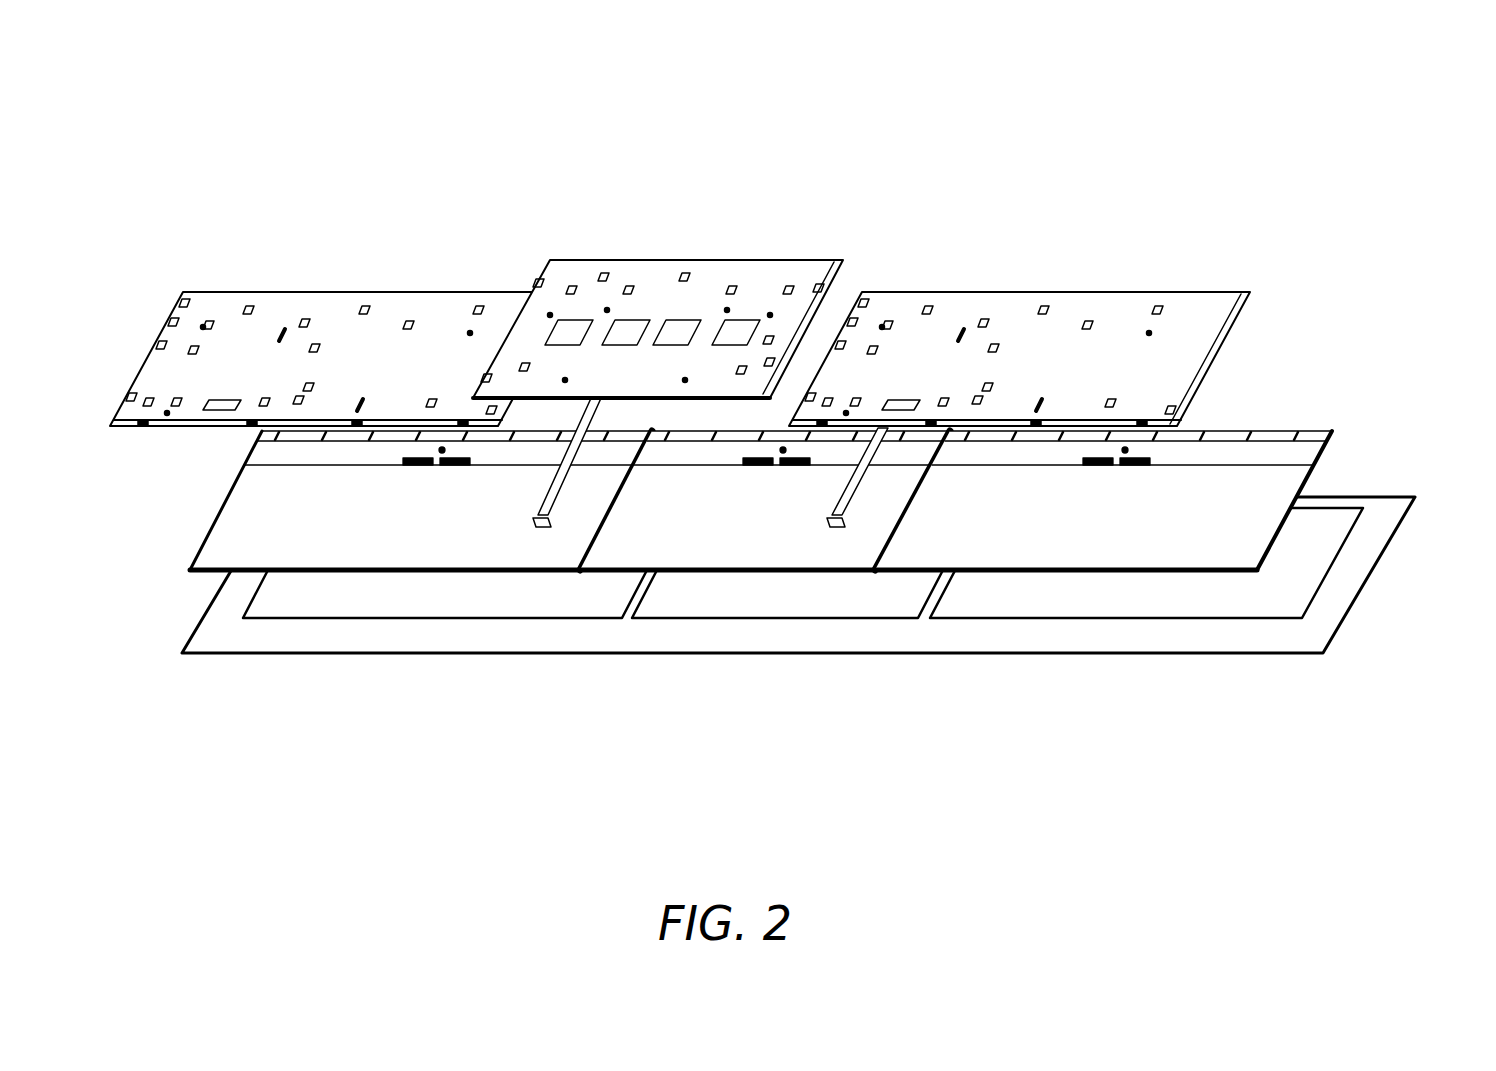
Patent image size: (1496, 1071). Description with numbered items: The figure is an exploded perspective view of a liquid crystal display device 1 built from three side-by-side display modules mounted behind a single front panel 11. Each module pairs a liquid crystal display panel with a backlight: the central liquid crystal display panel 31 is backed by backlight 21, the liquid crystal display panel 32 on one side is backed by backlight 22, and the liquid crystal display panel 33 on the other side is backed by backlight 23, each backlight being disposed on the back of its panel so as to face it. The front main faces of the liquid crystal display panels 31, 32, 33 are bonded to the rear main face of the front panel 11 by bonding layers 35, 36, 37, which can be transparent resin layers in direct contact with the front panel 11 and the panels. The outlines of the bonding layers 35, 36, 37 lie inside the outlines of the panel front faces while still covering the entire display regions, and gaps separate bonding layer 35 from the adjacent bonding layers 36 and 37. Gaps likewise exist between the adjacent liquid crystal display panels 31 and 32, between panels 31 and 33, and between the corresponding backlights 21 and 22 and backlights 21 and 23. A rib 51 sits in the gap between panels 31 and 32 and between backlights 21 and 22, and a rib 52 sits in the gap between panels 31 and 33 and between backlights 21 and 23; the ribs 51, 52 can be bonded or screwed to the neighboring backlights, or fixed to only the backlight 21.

The liquid crystal display device 1 is at (955, 158).
The front panel 11 is at (1215, 655).
The backlight 21 is at (645, 268).
The backlight 22 is at (305, 292).
The backlight 23 is at (1053, 292).
The liquid crystal display panel 31 is at (727, 573).
The liquid crystal display panel 32 is at (400, 575).
The liquid crystal display panel 33 is at (1075, 573).
The bonding layer 35 is at (787, 617).
The bonding layer 36 is at (243, 617).
The bonding layer 37 is at (1330, 568).
The rib 51 is at (540, 528).
The rib 52 is at (835, 528).